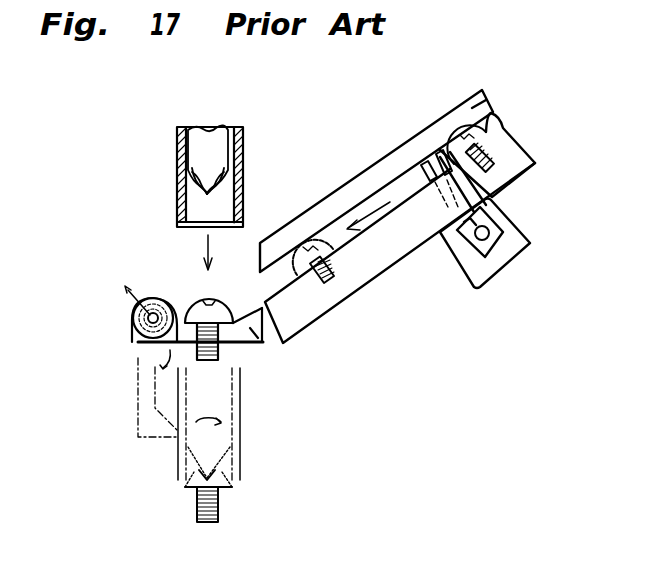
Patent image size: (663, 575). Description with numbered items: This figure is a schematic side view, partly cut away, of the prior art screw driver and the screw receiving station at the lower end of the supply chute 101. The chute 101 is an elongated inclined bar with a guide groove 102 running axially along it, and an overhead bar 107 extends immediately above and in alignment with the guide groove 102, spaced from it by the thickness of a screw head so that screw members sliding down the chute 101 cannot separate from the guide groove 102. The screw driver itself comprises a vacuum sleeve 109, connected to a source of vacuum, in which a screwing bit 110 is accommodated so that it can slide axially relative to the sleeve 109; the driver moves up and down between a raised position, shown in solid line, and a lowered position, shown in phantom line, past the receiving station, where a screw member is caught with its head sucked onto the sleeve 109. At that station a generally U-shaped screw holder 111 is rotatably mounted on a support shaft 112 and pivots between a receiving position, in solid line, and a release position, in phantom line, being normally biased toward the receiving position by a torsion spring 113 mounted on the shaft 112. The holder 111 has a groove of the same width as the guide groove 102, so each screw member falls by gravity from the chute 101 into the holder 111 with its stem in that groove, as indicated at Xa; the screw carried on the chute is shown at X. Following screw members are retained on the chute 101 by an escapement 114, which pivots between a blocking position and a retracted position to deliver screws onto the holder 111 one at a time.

The chute 101 is at (385, 253).
The guide groove 102 is at (413, 222).
The overhead bar 107 is at (485, 102).
The vacuum sleeve 109 is at (177, 157).
The screwing bit 110 is at (200, 132).
The screw holder 111 is at (263, 343).
The support shaft 112 is at (148, 327).
The torsion spring 113 is at (133, 313).
The escapement 114 is at (470, 237).
The clamp unit X is at (497, 121).
The screw member received in screw holder Xa is at (197, 300).